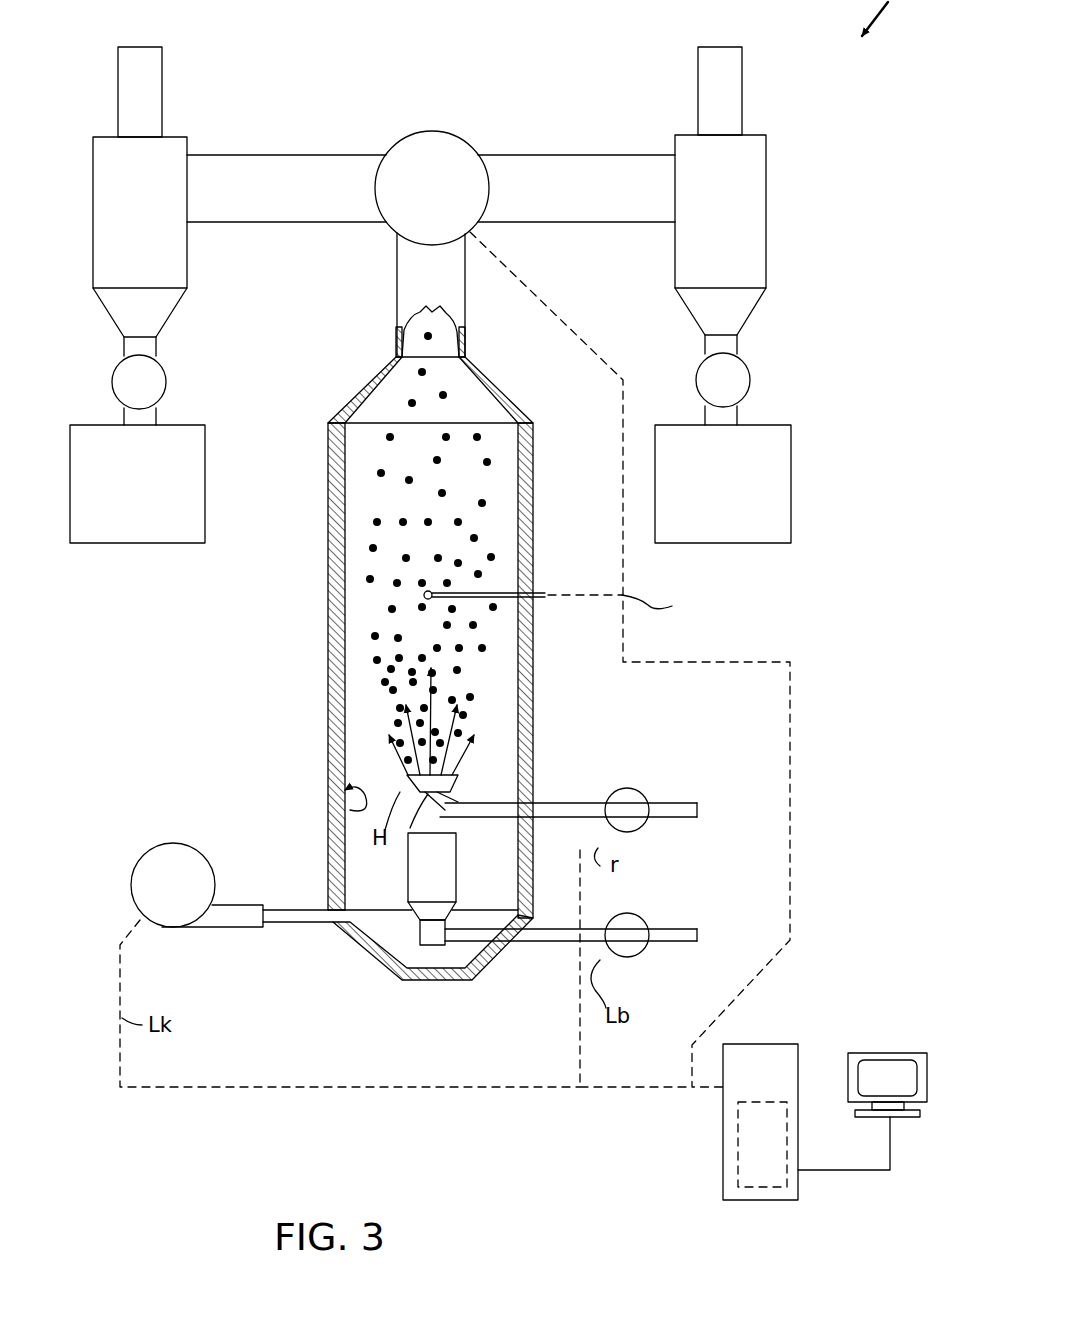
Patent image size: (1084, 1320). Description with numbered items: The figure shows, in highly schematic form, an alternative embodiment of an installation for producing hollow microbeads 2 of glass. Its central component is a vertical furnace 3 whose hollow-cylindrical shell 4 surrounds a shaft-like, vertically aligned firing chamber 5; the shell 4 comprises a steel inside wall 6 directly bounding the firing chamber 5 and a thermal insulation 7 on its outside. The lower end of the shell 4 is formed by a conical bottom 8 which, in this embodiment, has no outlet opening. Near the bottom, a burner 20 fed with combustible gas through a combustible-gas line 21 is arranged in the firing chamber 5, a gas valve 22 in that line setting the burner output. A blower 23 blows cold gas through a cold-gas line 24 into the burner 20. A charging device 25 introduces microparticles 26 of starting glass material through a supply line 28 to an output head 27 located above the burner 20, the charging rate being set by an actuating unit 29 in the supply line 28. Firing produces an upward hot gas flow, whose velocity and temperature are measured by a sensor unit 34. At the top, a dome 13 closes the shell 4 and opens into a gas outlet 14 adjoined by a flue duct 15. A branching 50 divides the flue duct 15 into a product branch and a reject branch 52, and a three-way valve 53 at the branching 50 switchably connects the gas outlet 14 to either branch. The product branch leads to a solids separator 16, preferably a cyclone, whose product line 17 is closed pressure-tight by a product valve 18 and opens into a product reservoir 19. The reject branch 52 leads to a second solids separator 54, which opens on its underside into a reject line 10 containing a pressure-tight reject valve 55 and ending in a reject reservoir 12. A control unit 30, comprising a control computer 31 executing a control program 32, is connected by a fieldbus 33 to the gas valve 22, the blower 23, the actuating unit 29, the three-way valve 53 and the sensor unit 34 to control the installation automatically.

The hollow microbeads 2 is at (366, 579).
The vertical furnace 3 is at (298, 650).
The shell 4 is at (330, 706).
The firing chamber 5 is at (533, 470).
The inside wall 6 is at (328, 805).
The thermal insulation 7 is at (533, 656).
The bottom 8 is at (480, 965).
The reject line 10 is at (156, 345).
The reject reservoir 12 is at (205, 470).
The dome 13 is at (366, 386).
The gas outlet 14 is at (400, 342).
The flue duct 15 is at (235, 155).
The solids separator 16 is at (766, 192).
The product line 17 is at (737, 342).
The product valve 18 is at (750, 380).
The product reservoir 19 is at (791, 475).
The burner 20 is at (458, 882).
The combustible-gas line 21 is at (668, 925).
The gas valve 22 is at (622, 957).
The blower 23 is at (150, 845).
The cold-gas line 24 is at (282, 925).
The charging device 25 is at (640, 768).
The microparticles 26 is at (470, 697).
The output head 27 is at (456, 795).
The supply line 28 is at (668, 798).
The actuating unit 29 is at (640, 830).
The control unit 30 is at (876, 1000).
The control computer 31 is at (722, 1160).
The control program 32 is at (762, 1188).
The fieldbus 33 is at (795, 778).
The sensor unit 34 is at (432, 585).
The branching 50 is at (468, 105).
The reject branch 52 is at (540, 296).
The three-way valve 53 is at (415, 132).
The second solids separator 54 is at (187, 262).
The reject valve 55 is at (166, 380).